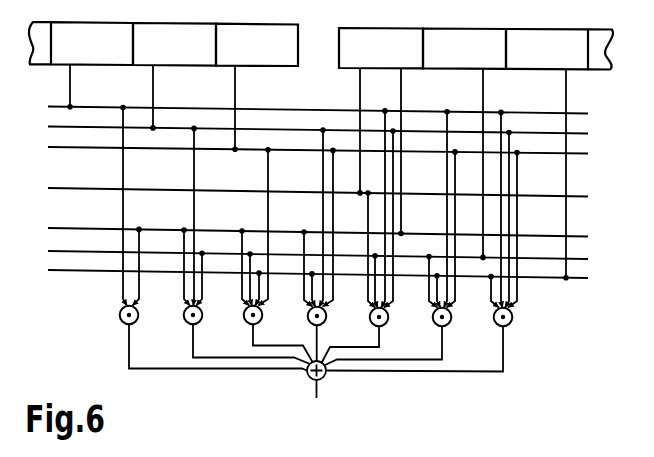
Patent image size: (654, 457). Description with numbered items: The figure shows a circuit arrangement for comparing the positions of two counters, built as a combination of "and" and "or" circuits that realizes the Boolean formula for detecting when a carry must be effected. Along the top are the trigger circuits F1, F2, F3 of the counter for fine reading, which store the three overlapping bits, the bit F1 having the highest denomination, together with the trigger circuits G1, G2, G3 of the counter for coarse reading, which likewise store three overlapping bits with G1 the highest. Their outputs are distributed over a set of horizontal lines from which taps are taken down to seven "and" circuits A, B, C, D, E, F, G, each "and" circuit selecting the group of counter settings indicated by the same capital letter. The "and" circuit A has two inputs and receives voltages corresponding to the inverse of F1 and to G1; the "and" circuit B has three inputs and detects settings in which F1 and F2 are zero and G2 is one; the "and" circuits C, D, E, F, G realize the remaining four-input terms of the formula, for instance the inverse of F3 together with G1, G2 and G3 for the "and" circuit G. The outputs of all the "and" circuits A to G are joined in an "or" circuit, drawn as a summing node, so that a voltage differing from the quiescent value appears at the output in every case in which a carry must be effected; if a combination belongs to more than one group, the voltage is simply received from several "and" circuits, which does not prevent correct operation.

The trigger circuit G1 is at (92, 65).
The trigger circuit G2 is at (174, 77).
The trigger circuit G3 is at (257, 88).
The trigger circuit F1 is at (381, 132).
The trigger circuit F2 is at (464, 145).
The trigger circuit F3 is at (547, 155).
The "and" circuit A is at (204, 238).
The "and" circuit B is at (237, 245).
The "and" circuit C is at (271, 254).
The "and" circuit D is at (313, 244).
The "and" circuit E is at (359, 235).
The "and" circuit F is at (391, 237).
The "and" circuit G is at (423, 241).